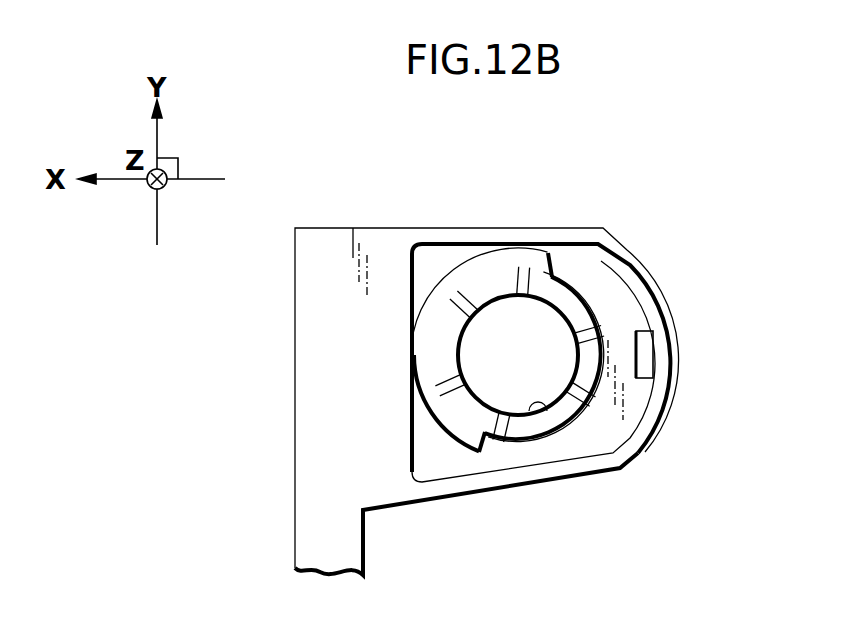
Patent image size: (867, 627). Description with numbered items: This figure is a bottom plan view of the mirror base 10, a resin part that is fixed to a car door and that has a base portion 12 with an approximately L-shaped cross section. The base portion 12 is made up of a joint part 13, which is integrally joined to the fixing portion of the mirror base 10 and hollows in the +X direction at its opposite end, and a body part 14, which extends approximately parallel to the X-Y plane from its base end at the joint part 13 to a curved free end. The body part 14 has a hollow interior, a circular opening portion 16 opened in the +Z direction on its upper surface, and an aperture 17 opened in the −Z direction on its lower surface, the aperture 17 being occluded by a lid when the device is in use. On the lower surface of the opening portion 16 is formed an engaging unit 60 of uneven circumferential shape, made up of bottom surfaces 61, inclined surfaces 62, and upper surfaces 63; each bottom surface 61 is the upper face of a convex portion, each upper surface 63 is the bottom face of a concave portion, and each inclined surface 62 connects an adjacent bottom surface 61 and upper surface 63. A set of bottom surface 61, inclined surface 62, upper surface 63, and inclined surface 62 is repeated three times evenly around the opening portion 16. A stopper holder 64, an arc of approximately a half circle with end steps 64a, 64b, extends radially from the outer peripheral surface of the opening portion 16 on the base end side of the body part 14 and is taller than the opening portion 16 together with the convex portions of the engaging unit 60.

The mirror base 10 is at (651, 247).
The base portion 12 is at (440, 135).
The joint part 13 is at (330, 247).
The body part 14 is at (438, 240).
The opening portion 16 is at (528, 413).
The aperture 17 is at (622, 418).
The engaging unit 60 is at (605, 288).
The bottom surface 61 is at (513, 272).
The inclined surface 62 is at (472, 278).
The upper surface 63 is at (442, 335).
The stopper holder 64 is at (498, 258).
The scroll wall step 64a is at (556, 268).
The scroll wall step 64b is at (484, 460).